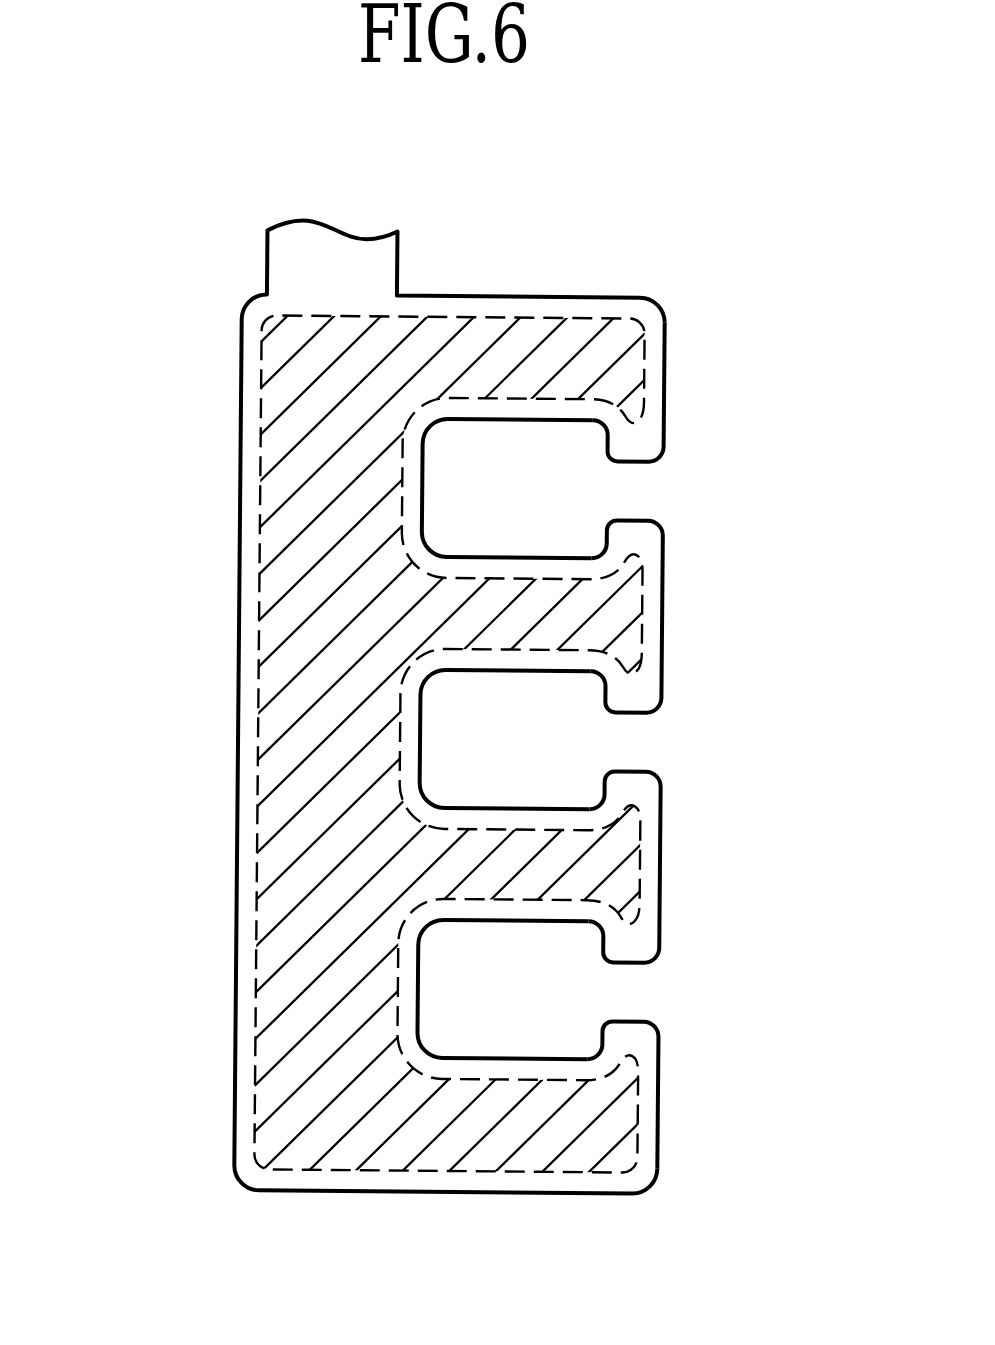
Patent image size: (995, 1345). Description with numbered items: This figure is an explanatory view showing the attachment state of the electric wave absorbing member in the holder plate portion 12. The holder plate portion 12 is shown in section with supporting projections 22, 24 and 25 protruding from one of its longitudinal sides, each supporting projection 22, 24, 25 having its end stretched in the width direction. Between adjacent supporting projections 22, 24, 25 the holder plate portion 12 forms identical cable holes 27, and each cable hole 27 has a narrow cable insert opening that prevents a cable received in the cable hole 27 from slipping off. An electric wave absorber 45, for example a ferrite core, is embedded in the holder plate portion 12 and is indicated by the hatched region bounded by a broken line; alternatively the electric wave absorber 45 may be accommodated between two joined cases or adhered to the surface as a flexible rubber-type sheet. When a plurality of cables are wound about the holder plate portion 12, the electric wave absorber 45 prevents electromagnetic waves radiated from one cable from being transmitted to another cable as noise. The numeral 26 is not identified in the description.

The holder plate portion 12 is at (238, 677).
The supporting projection 22 is at (540, 495).
The supporting projection 24 is at (655, 365).
The supporting projection 25 is at (655, 613).
The tooth 26 is at (650, 858).
The cable hole 27 is at (648, 1102).
The electric wave absorber 45 is at (302, 477).